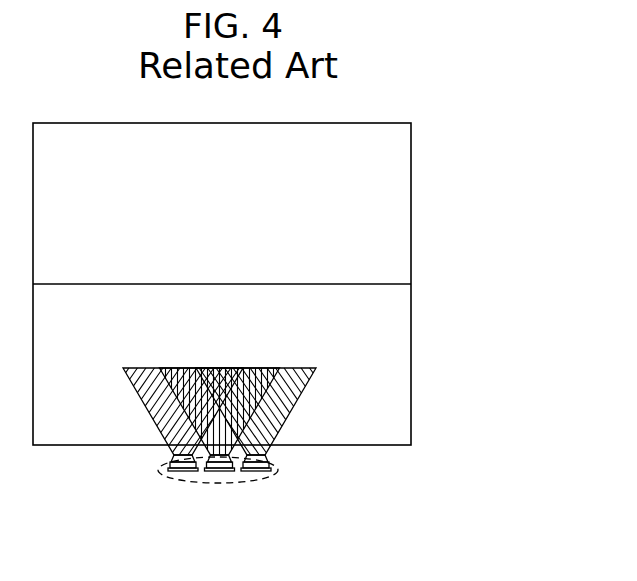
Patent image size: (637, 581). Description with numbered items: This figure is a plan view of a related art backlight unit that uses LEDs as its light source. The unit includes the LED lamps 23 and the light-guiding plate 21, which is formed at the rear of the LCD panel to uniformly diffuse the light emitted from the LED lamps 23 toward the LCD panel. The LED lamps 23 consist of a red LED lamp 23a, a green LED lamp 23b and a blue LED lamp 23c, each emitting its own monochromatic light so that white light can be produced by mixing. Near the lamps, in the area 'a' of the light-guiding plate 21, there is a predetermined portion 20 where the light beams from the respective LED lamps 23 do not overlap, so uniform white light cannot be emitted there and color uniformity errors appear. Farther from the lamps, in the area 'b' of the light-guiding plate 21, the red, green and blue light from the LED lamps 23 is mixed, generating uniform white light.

The light-guiding plate 21 is at (464, 181).
The area 'b' of the light-guiding plate b is at (404, 228).
The area 'a' of the light-guiding plate a is at (404, 369).
The predetermined portion 20 is at (178, 428).
The LED lamps 23 is at (278, 466).
The red LED lamp 23a is at (183, 477).
The green LED lamp 23b is at (218, 477).
The blue LED lamp 23c is at (255, 477).